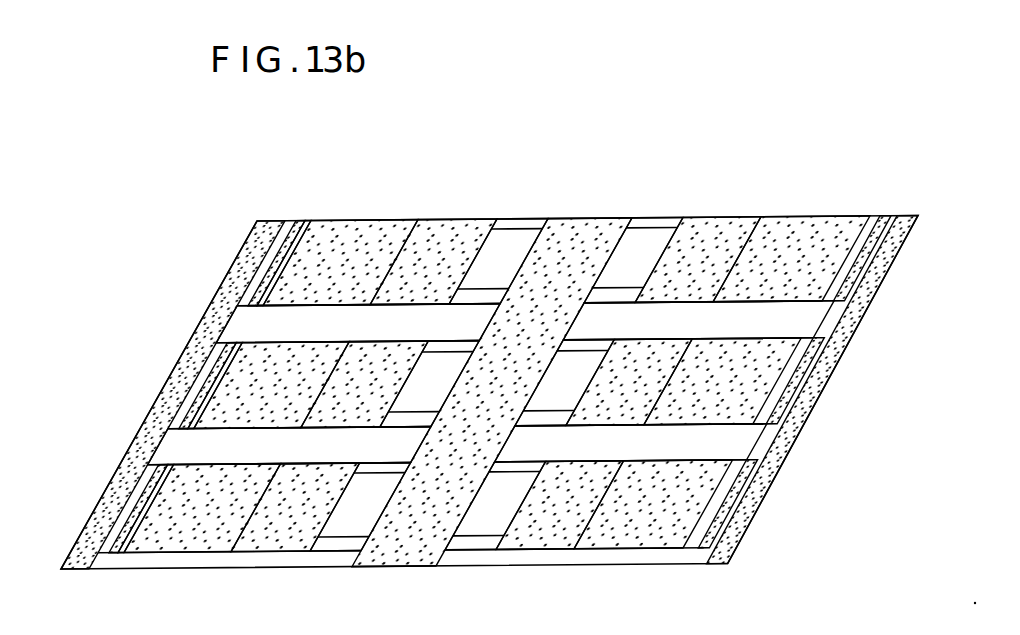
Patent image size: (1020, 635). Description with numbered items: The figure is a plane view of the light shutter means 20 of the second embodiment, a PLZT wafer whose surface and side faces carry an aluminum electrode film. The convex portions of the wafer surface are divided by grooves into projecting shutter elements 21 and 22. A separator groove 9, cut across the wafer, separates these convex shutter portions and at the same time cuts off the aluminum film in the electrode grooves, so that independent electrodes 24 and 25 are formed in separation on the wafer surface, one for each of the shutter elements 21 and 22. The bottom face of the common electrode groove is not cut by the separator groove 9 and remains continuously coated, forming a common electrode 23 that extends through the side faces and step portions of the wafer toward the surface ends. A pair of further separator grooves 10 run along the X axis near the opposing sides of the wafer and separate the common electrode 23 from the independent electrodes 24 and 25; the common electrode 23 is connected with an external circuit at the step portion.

The separator groove 9 is at (180, 437).
The further separator grooves 10 is at (306, 222).
The light shutter means 20 is at (225, 272).
The shutter element 21 is at (512, 243).
The shutter element 22 is at (652, 237).
The common electrode 23 is at (291, 221).
The independent electrode 24 is at (383, 230).
The independent electrode 25 is at (745, 221).